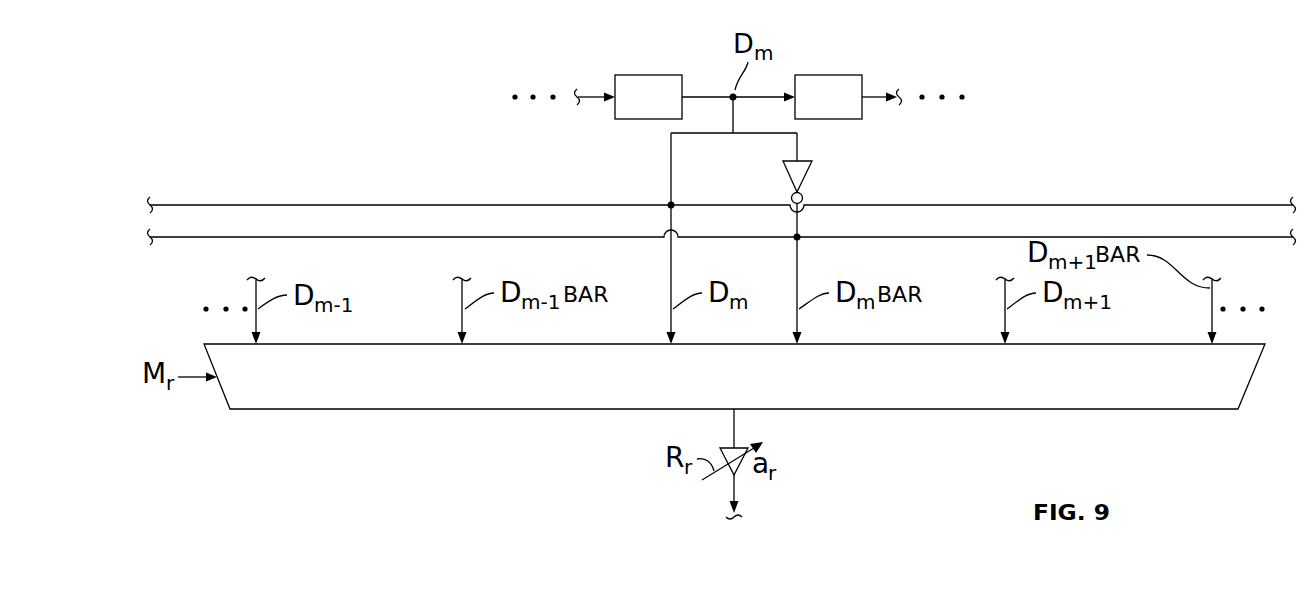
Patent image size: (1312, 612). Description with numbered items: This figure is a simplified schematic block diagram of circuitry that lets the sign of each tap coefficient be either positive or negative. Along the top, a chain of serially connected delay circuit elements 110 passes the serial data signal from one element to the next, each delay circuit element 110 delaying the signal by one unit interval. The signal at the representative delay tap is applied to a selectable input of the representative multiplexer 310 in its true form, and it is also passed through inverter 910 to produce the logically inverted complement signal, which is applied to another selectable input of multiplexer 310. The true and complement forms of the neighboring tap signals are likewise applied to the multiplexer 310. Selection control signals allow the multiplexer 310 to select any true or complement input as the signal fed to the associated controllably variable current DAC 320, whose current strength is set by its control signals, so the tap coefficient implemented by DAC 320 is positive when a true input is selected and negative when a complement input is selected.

The delay circuit element 110 is at (643, 73).
The inverter 910 is at (810, 170).
The multiplexer 310 is at (1177, 410).
The controllably variable current DAC 320 is at (730, 446).